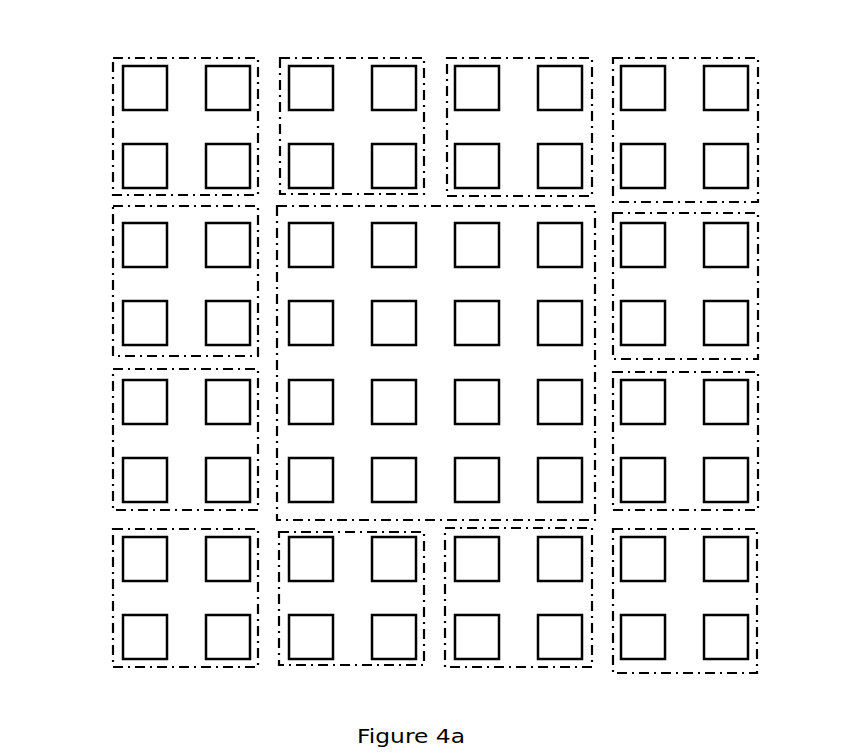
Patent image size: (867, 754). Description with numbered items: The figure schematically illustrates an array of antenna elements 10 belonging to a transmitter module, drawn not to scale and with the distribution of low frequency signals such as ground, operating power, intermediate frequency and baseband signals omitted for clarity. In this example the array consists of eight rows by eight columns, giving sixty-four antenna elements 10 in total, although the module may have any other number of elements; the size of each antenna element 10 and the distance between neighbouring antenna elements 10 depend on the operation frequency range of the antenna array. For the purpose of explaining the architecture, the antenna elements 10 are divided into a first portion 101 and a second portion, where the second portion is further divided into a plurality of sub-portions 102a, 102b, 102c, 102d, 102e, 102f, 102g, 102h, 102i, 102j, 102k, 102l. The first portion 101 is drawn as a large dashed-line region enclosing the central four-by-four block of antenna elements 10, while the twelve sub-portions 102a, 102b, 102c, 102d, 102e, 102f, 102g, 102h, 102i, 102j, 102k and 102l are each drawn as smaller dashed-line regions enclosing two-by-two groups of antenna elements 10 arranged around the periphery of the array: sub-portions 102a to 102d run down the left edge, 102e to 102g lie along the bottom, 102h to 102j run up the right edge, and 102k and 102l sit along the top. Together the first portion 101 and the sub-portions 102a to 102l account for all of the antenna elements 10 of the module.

The antenna element 10 is at (140, 85).
The first portion 101 is at (353, 285).
The sub-portion of the second portion 102a is at (145, 122).
The sub-portion of the second portion 102b is at (183, 282).
The sub-portion of the second portion 102c is at (133, 438).
The sub-portion of the second portion 102d is at (148, 601).
The sub-portion of the second portion 102e is at (355, 645).
The sub-portion of the second portion 102f is at (525, 640).
The sub-portion of the second portion 102g is at (687, 647).
The sub-portion of the second portion 102h is at (727, 438).
The sub-portion of the second portion 102i is at (738, 285).
The sub-portion of the second portion 102j is at (738, 124).
The sub-portion of the second portion 102k is at (513, 78).
The sub-portion of the second portion 102l is at (348, 77).